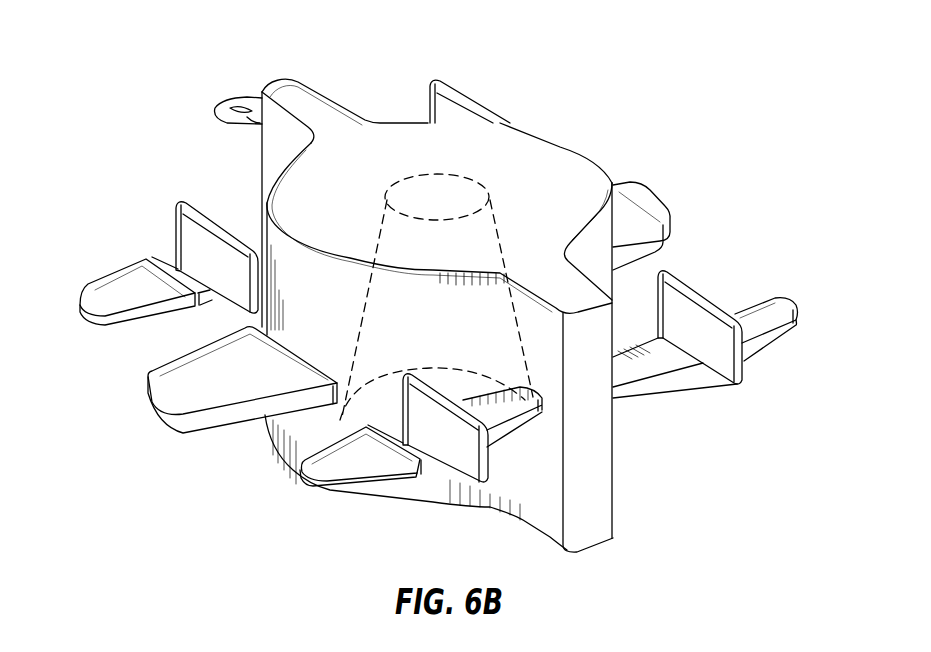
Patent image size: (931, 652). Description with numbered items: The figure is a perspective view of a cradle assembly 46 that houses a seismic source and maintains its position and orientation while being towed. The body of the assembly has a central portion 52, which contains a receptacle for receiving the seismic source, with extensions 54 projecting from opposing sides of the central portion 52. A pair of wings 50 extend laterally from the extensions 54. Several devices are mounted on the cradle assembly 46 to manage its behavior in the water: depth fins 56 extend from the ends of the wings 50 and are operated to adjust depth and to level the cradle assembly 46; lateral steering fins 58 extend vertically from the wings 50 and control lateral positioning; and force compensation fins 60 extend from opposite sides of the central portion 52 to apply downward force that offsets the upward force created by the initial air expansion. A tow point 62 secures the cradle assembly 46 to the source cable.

The cradle assembly 46 is at (645, 46).
The wings 50 is at (256, 236).
The central portion 52 is at (552, 147).
The extensions 54 is at (270, 157).
The depth fins 56 is at (100, 303).
The lateral steering fins 58 is at (446, 80).
The force compensation fins 60 is at (643, 200).
The tow point 62 is at (222, 110).